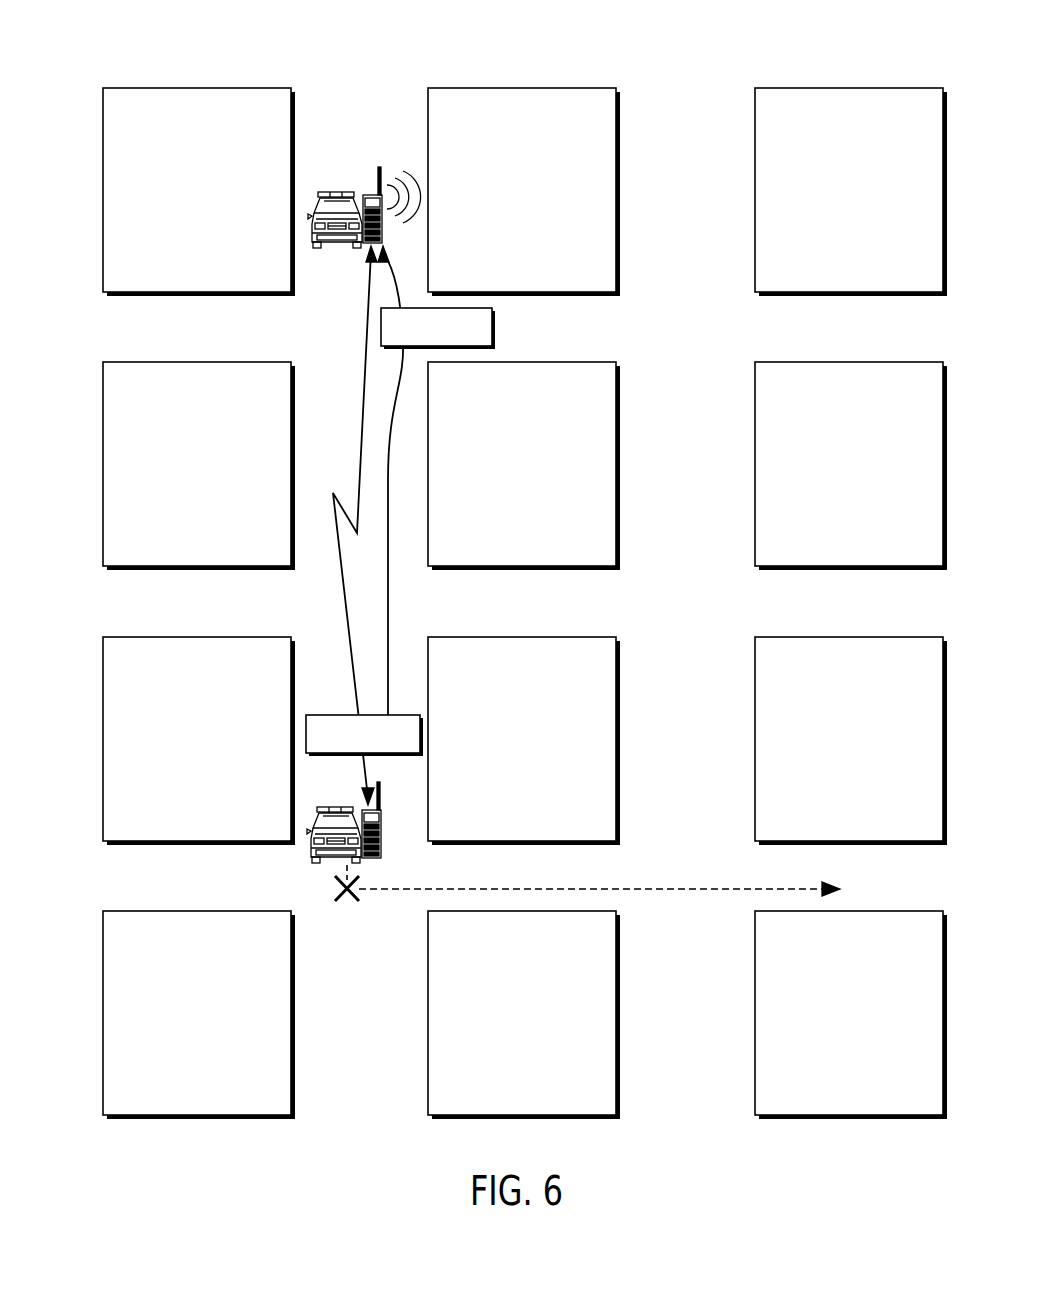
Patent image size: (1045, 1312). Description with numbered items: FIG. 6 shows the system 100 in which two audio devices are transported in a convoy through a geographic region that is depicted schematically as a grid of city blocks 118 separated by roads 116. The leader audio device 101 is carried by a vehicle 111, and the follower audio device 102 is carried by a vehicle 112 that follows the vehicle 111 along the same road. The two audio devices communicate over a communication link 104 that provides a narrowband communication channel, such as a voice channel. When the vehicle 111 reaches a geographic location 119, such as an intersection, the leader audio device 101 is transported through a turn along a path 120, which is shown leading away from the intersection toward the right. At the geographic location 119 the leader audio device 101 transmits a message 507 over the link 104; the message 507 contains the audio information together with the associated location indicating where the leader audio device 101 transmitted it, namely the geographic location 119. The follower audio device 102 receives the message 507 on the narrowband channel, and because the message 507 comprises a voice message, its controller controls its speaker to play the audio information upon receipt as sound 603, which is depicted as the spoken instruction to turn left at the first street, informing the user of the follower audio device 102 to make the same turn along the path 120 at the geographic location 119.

The system 100 is at (488, 566).
The leader audio device 101 is at (382, 795).
The follower audio device 102 is at (378, 167).
The communication link 104 is at (346, 612).
The vehicle 111 is at (318, 826).
The vehicle 112 is at (330, 192).
The roads 116 is at (331, 359).
The city blocks 118 is at (103, 466).
The geographic location 119 is at (337, 892).
The path 120 is at (826, 889).
The message 507 is at (494, 327).
The sound 603 is at (395, 182).